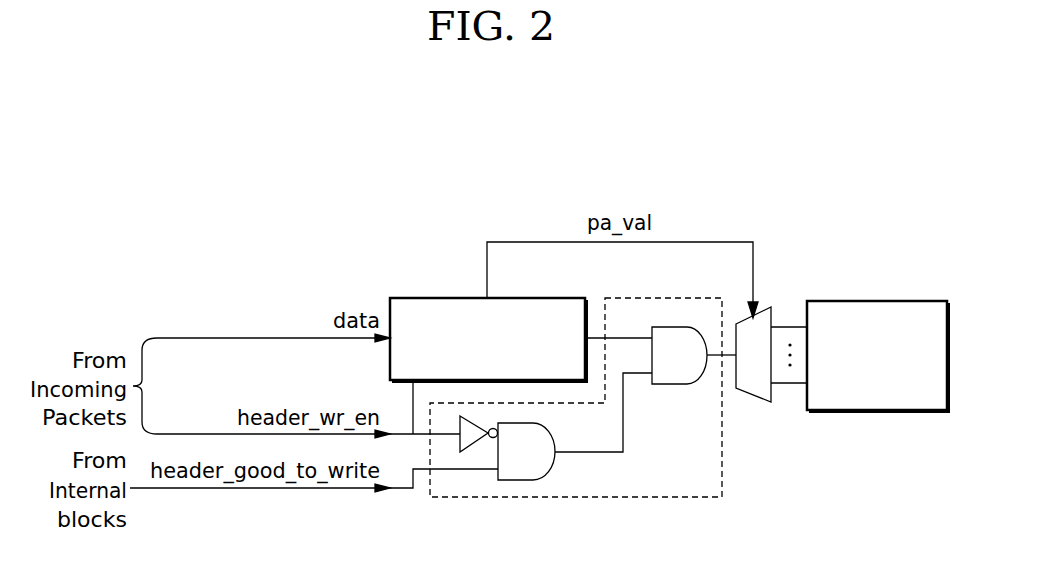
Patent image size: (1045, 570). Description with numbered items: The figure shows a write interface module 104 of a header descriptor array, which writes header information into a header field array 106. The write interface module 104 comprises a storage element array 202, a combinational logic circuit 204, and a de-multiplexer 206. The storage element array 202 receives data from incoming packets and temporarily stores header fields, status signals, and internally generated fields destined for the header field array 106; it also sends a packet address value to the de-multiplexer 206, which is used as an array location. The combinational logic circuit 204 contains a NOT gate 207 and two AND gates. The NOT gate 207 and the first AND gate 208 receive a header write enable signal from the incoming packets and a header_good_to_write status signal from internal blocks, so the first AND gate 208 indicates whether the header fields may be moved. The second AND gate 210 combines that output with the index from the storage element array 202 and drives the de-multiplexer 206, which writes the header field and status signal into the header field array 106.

The write interface module 104 is at (858, 229).
The header field array 106 is at (879, 300).
The storage element array 202 is at (518, 297).
The combinational logic circuit 204 is at (663, 297).
The de-multiplexer (DEMUX) 206 is at (752, 400).
The NOT gate 207 is at (472, 452).
The first AND gate 208 is at (526, 480).
The second AND gate 210 is at (680, 384).